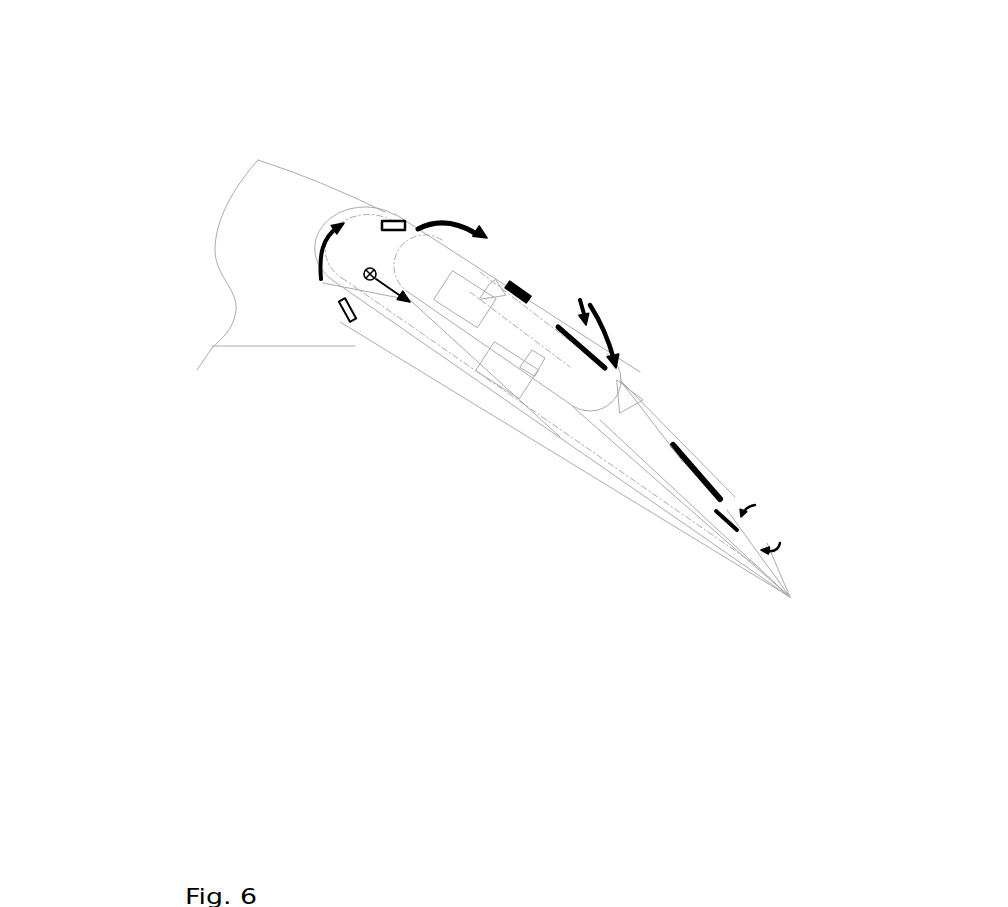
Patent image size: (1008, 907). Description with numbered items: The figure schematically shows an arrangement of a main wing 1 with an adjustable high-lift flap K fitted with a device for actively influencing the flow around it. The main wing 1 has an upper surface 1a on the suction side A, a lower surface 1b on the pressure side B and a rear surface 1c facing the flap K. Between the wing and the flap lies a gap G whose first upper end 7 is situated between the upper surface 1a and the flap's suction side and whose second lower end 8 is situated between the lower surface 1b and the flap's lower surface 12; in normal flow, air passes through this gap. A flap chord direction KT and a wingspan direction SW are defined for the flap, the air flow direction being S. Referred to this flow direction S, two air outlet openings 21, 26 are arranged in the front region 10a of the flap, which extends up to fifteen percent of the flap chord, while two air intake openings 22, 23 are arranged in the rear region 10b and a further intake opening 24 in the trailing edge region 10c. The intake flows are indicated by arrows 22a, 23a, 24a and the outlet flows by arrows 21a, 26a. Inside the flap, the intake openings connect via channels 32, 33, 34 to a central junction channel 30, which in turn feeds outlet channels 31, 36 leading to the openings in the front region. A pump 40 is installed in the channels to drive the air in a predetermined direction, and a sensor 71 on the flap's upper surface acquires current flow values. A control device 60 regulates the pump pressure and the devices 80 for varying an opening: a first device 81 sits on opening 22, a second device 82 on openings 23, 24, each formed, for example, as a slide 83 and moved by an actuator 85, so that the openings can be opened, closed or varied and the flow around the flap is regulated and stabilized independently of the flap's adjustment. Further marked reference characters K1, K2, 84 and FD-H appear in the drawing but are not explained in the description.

The main wing 1 is at (247, 188).
The upper surface of the main wing 1a is at (270, 166).
The lower surface of the main wing 1b is at (218, 345).
The rear surface of the main wing 1c is at (343, 323).
The first upper end of the gap 7 is at (384, 216).
The second lower end of the gap 8 is at (358, 344).
The front region of the high-lift flap 10a is at (372, 227).
The rear region of the high-lift flap 10b is at (665, 516).
The trailing edge region of the high-lift flap 10c is at (780, 598).
The lower surface of the high-lift flap 12 is at (472, 417).
The air outlet opening 21 is at (437, 215).
The outlet flow arrow 21a is at (495, 228).
The air intake opening 22 is at (622, 375).
The intake flow arrow 22a is at (600, 315).
The air intake opening 23 is at (733, 512).
The intake flow arrow 23a is at (755, 508).
The air intake opening 24 is at (758, 545).
The intake flow arrow 24a is at (782, 547).
The air outlet opening 26 is at (328, 290).
The outlet flow arrow 26a is at (323, 255).
The junction channel 30 is at (430, 311).
The outlet channel 31 is at (400, 250).
The channel 32 is at (603, 405).
The channel 33 is at (722, 512).
The channel 34 is at (747, 543).
The outlet channel 36 is at (370, 293).
The pump 40 is at (525, 386).
The control device 60 is at (478, 317).
The sensor 71 is at (522, 280).
The device for varying an outlet opening 80 is at (630, 272).
The first device for varying an outlet opening 81 is at (580, 300).
The second device for varying an outlet opening 82 is at (700, 448).
The slide 83 is at (342, 307).
The pivot bearing 84 is at (398, 220).
The actuator 85 is at (577, 353).
The suction side A is at (677, 163).
The pressure side B is at (293, 607).
The gap G is at (362, 218).
The high-lift flap K is at (497, 402).
The first contour K1 is at (328, 262).
The second contour K2 is at (787, 597).
The flap chord direction KT is at (385, 312).
The flow direction S is at (392, 75).
The wingspan direction SW is at (386, 272).
The vertical direction FD-H is at (102, 178).